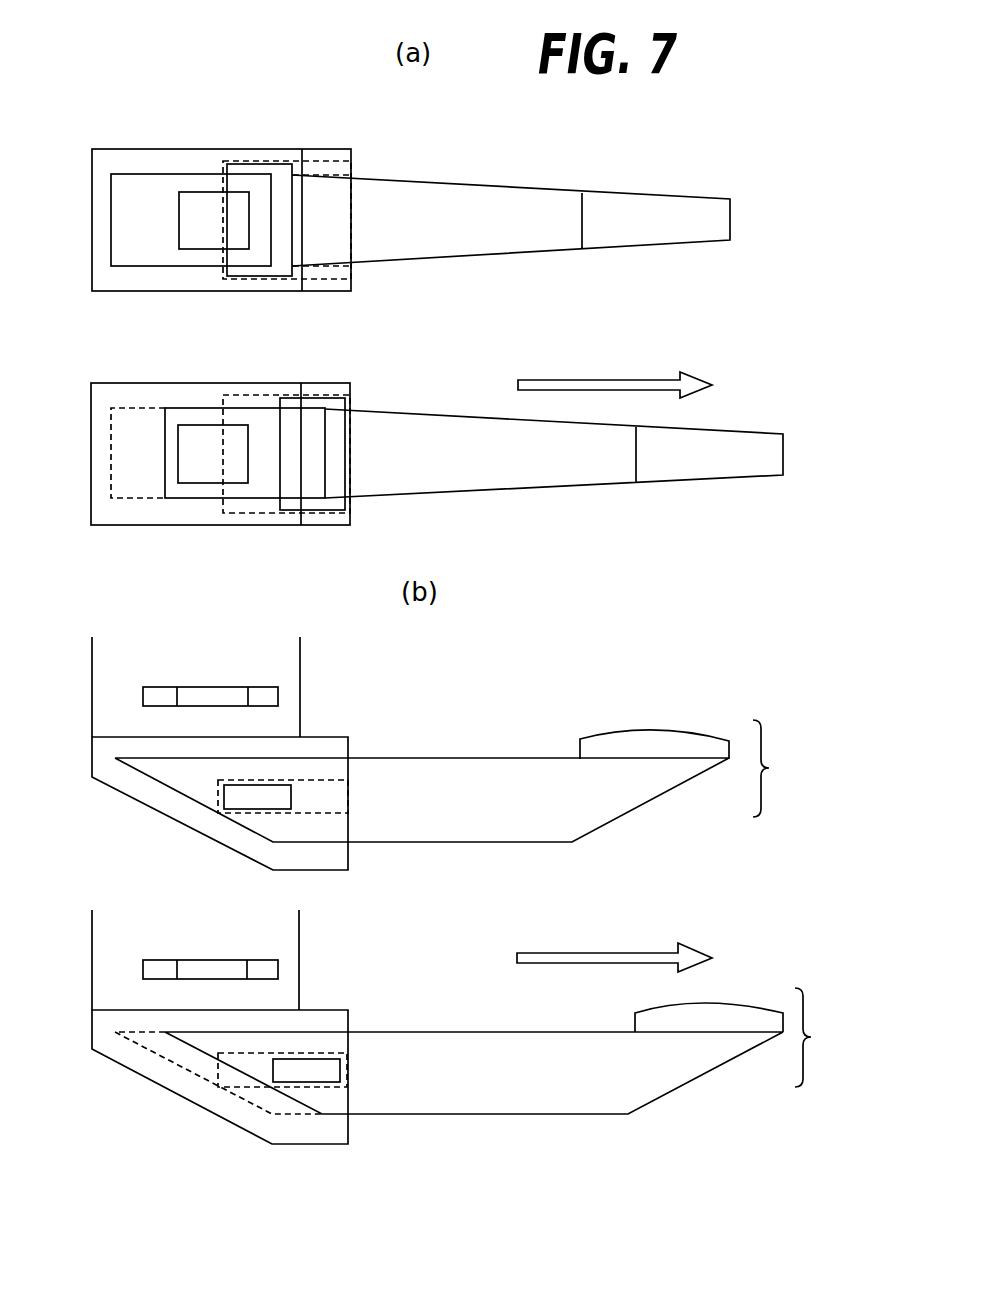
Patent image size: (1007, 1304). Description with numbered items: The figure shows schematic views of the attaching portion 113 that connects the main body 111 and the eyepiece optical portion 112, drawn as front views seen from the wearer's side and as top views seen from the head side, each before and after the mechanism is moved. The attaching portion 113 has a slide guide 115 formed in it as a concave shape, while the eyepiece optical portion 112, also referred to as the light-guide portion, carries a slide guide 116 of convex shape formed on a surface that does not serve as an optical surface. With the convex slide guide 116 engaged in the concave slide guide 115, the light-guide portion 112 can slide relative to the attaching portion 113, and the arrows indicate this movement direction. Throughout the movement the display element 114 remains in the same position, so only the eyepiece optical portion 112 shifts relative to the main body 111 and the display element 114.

The main body 111 is at (98, 682).
The eyepiece optical portion 112 is at (662, 212).
The attaching portion 113 is at (122, 148).
The display element 114 is at (208, 200).
The slide guide 115 is at (320, 165).
The slide guide 116 is at (279, 167).